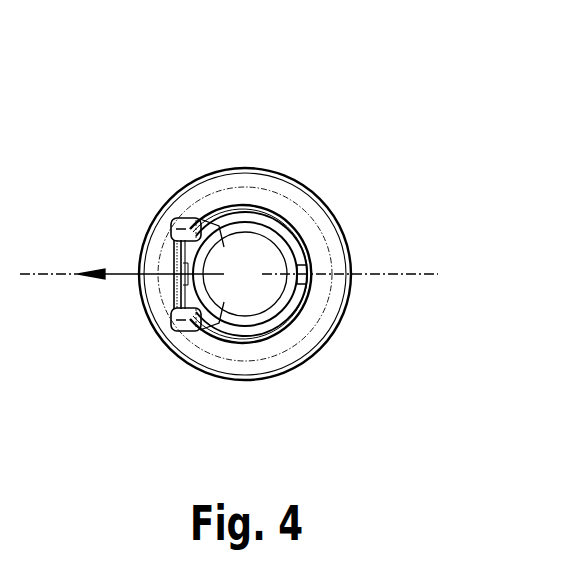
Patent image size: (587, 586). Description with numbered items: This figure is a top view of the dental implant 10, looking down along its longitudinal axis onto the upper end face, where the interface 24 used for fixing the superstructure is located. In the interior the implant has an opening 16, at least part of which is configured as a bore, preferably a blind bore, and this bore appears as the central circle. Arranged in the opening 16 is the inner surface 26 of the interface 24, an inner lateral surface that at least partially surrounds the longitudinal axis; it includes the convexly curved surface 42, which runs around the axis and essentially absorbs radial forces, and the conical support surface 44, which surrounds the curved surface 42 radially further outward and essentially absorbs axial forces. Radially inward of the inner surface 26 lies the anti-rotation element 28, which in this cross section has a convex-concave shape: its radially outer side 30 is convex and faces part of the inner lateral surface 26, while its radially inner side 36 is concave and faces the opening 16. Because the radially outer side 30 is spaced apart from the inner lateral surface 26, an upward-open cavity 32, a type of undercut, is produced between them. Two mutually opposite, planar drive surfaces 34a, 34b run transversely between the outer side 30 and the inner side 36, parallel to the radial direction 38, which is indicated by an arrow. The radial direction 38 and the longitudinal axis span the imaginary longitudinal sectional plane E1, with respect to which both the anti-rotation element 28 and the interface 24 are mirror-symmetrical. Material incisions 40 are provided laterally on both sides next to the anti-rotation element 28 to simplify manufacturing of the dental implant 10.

The dental implant 10 is at (345, 170).
The opening 16 is at (257, 290).
The interface 24 is at (265, 203).
The inner surface 26 is at (320, 252).
The anti-rotation element 28 is at (176, 298).
The radially outer side 30 is at (173, 263).
The cavity 32 is at (183, 292).
The drive surface 34a is at (188, 333).
The drive surface 34b is at (192, 212).
The radially inner side 36 is at (218, 207).
The radial direction 38 is at (112, 272).
The material incisions 40 is at (183, 230).
The convexly curved surface 42 is at (300, 330).
The support surface 44 is at (243, 182).
The longitudinal sectional plane E1 is at (413, 278).